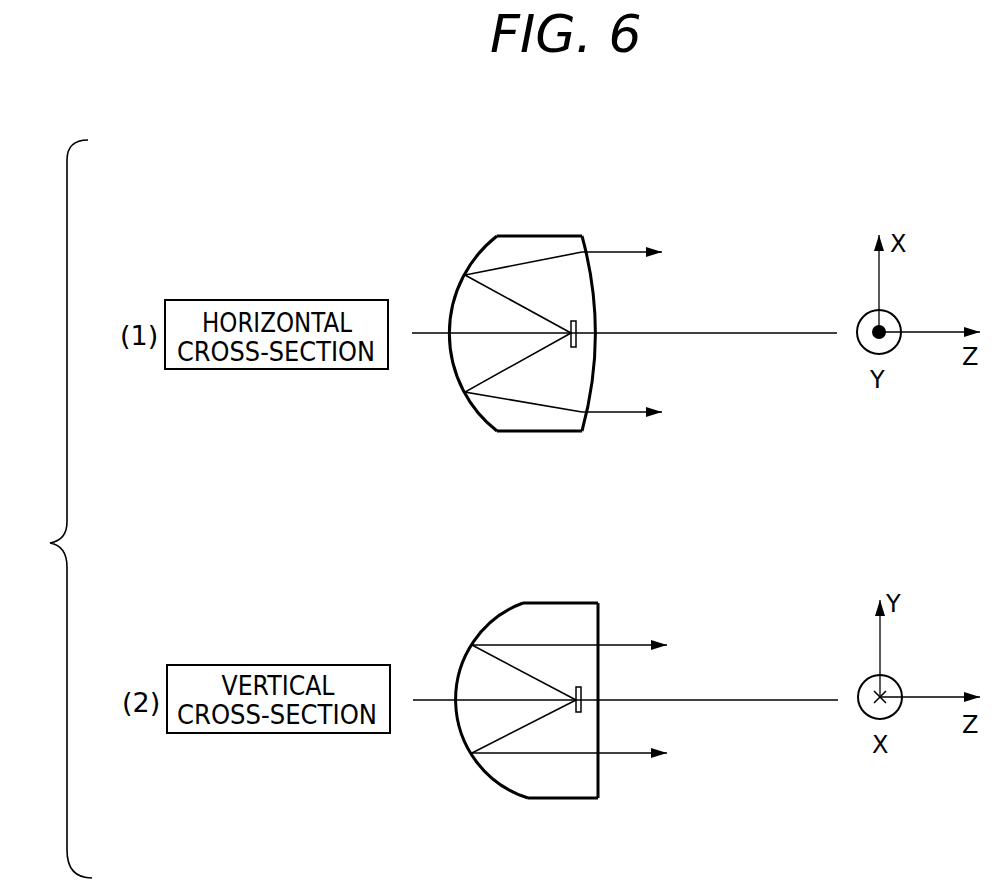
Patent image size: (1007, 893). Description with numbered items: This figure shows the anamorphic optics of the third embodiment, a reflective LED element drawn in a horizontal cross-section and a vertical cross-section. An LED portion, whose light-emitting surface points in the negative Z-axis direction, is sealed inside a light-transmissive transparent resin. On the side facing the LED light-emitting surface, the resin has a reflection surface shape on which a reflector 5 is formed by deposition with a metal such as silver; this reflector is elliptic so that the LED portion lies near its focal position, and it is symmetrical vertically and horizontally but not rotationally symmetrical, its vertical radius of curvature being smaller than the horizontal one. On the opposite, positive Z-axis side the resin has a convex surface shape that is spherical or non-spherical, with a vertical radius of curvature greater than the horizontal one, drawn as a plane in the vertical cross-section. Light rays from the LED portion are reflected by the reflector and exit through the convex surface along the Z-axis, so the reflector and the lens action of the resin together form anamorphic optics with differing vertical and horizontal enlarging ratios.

The lens 5 is at (468, 700).